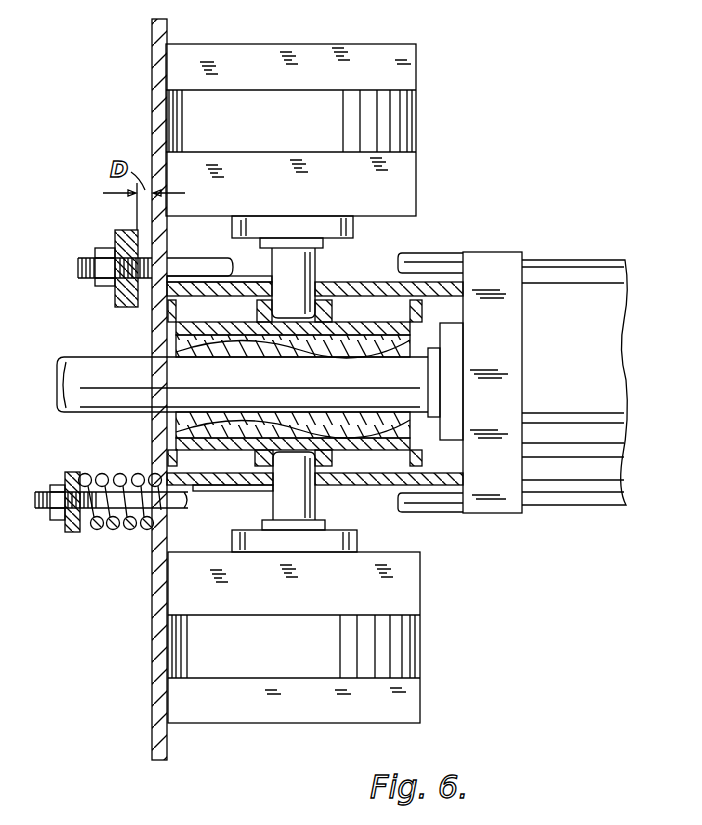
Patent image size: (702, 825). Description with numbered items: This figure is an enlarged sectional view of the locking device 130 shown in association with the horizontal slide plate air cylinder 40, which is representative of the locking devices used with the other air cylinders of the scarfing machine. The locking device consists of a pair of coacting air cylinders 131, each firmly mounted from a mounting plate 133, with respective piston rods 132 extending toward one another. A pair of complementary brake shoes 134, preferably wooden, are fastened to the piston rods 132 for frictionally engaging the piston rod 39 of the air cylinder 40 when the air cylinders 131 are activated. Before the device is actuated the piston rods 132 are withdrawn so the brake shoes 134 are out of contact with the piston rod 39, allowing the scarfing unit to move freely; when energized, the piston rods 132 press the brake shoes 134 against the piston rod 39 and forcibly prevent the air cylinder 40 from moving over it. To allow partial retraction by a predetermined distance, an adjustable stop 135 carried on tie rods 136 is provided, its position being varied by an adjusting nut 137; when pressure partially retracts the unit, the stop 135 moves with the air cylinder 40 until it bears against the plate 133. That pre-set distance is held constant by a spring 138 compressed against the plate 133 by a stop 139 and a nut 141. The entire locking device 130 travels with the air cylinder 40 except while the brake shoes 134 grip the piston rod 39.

The locking device 130 is at (101, 684).
The air cylinders 131 is at (395, 58).
The piston rods 132 is at (300, 265).
The mounting plate 133 is at (156, 113).
The brake shoes 134 is at (190, 346).
The adjustable stop 135 is at (116, 294).
The tie rods 136 is at (441, 262).
The adjusting nut 137 is at (112, 250).
The spring 138 is at (98, 536).
The stop 139 is at (66, 535).
The nut 141 is at (56, 500).
The piston rod 39 is at (73, 366).
The horizontal slide plate air cylinder 40 is at (612, 337).